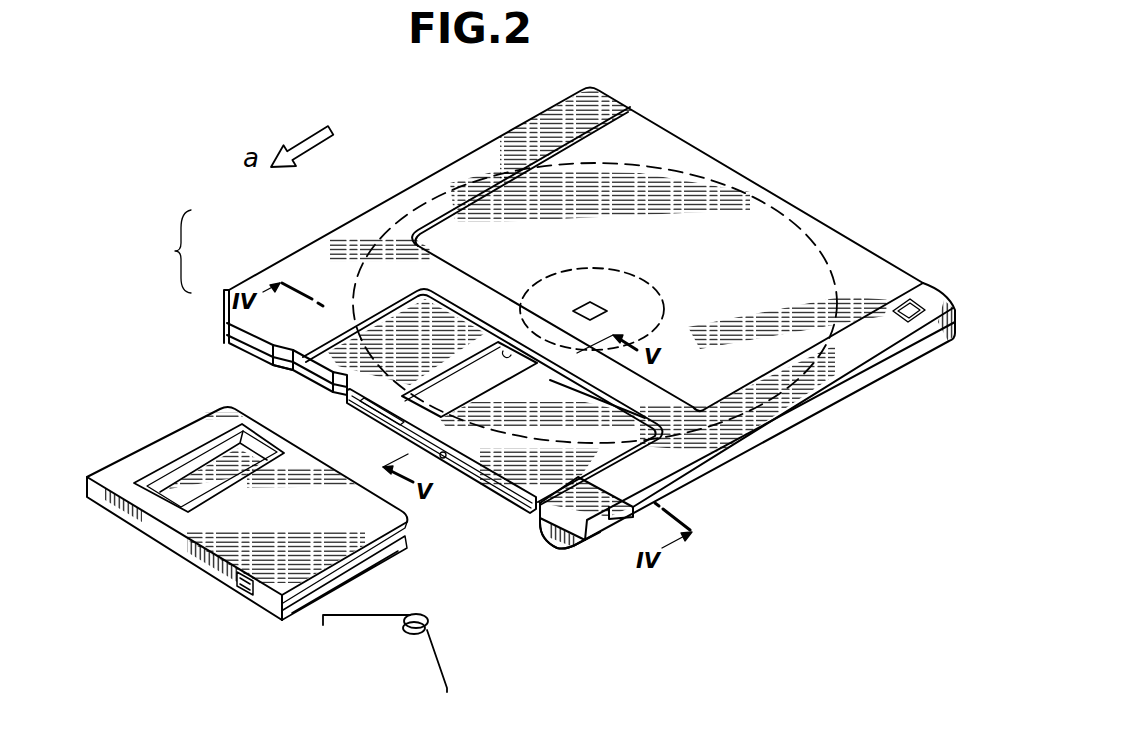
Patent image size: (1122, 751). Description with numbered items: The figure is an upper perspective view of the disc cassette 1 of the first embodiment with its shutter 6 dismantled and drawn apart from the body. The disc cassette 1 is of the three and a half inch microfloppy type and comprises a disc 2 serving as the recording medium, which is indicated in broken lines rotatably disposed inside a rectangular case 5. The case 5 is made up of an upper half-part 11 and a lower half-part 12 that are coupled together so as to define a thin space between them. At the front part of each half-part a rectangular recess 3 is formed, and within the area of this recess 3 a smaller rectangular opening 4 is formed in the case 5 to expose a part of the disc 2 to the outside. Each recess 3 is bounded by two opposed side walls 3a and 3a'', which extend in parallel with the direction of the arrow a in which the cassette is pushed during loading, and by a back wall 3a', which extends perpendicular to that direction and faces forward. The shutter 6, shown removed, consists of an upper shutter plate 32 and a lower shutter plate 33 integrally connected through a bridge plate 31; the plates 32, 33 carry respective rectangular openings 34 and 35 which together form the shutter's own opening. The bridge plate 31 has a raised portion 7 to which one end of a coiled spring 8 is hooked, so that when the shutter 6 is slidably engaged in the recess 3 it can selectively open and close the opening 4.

The disc cassette 1 is at (737, 156).
The disc 2 is at (675, 168).
The rectangular recess 3 is at (320, 383).
The side wall 3a is at (427, 332).
The back wall 3a' is at (645, 259).
The side wall 3a'' is at (589, 536).
The rectangular opening 4 is at (498, 340).
The rectangular case 5 is at (170, 251).
The upper half-part 11 is at (230, 290).
The lower half-part 12 is at (228, 337).
The shutter 6 is at (175, 415).
The raised portion 7 is at (240, 585).
The coiled spring 8 is at (366, 616).
The bridge plate 31 is at (270, 597).
The upper shutter plate 32 is at (393, 517).
The lower shutter plate 33 is at (397, 543).
The rectangular opening 34 is at (153, 477).
The rectangular opening 35 is at (177, 480).